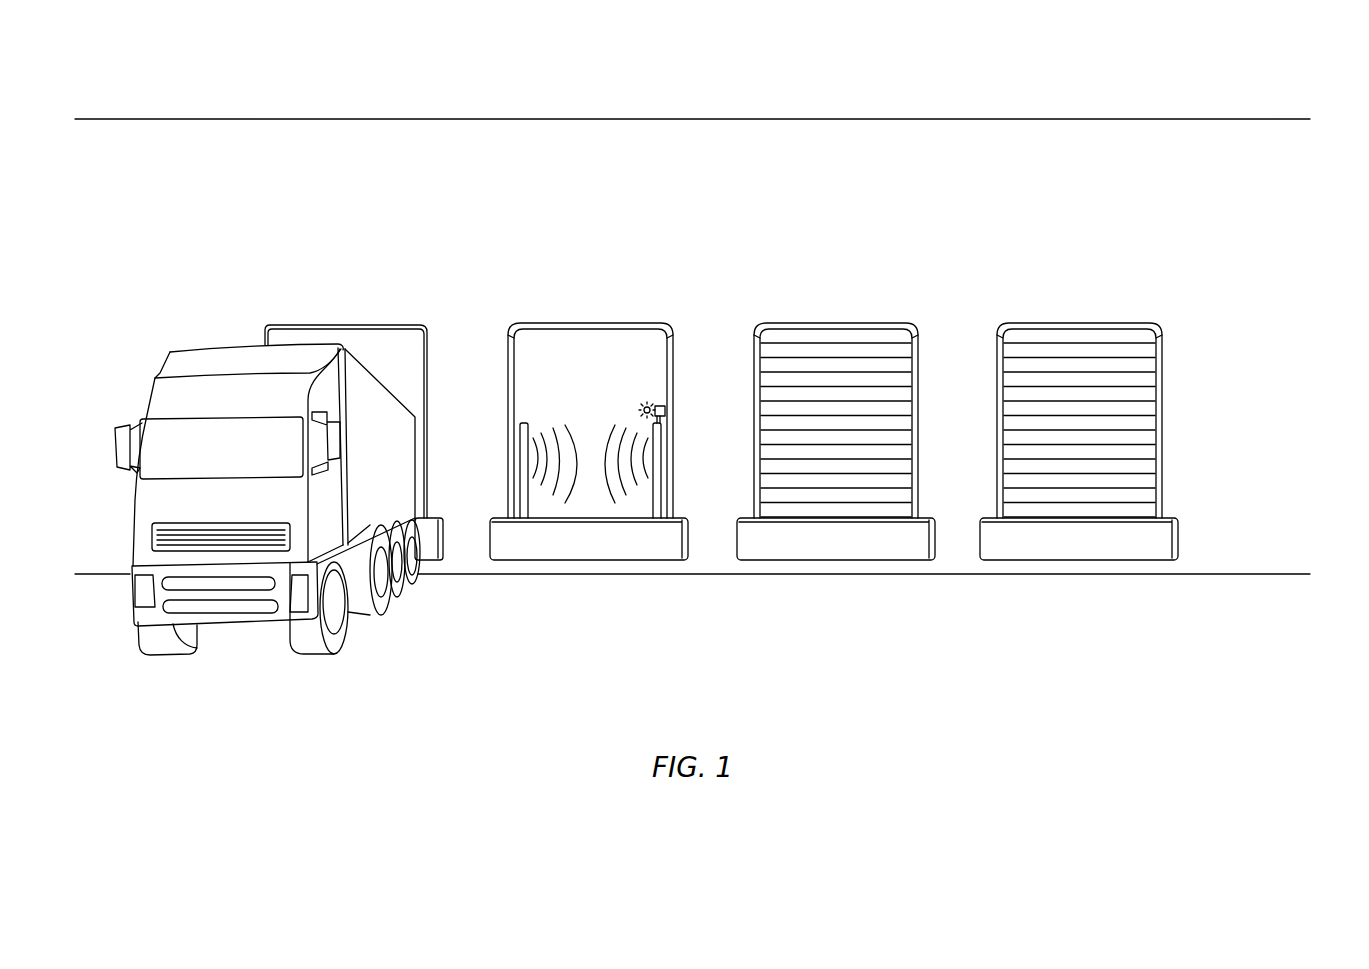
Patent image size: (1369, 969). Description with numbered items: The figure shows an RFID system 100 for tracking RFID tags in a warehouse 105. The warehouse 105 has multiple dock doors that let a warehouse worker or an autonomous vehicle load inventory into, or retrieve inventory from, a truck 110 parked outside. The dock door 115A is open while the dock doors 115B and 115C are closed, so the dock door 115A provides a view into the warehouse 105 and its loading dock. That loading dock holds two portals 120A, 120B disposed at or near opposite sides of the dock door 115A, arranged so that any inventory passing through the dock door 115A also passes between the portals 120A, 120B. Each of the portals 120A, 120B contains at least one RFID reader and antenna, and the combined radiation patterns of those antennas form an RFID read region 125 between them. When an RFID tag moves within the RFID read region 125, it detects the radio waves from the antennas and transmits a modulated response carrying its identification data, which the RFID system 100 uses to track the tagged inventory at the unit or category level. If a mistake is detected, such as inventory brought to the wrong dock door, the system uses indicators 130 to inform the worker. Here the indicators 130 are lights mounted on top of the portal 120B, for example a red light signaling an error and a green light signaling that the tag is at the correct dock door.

The RFID system 100 is at (335, 86).
The warehouse 105 is at (718, 118).
The truck 110 is at (238, 345).
The dock door 115A is at (672, 364).
The dock door 115B is at (917, 365).
The dock door 115C is at (993, 466).
The portal 120A is at (518, 466).
The portal 120B is at (663, 485).
The RFID read region 125 is at (577, 368).
The indicators 130 is at (660, 406).